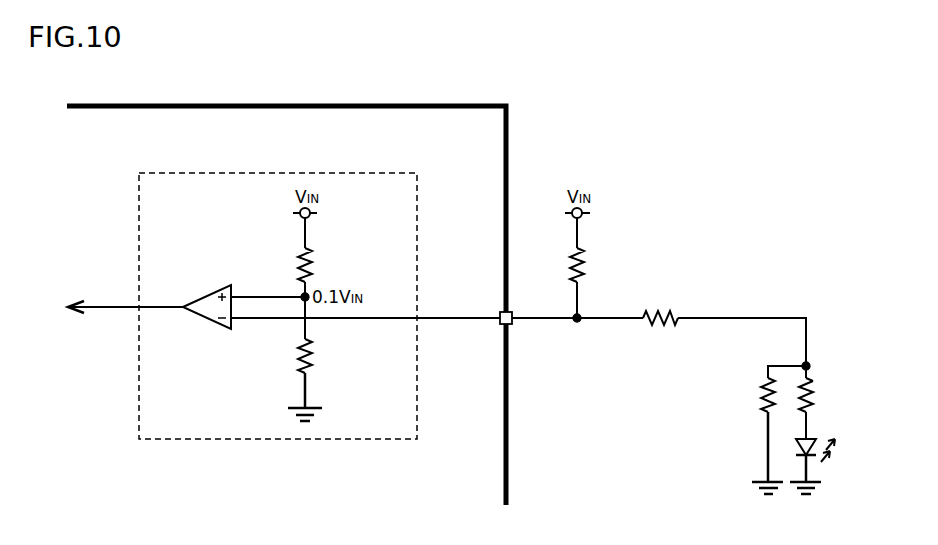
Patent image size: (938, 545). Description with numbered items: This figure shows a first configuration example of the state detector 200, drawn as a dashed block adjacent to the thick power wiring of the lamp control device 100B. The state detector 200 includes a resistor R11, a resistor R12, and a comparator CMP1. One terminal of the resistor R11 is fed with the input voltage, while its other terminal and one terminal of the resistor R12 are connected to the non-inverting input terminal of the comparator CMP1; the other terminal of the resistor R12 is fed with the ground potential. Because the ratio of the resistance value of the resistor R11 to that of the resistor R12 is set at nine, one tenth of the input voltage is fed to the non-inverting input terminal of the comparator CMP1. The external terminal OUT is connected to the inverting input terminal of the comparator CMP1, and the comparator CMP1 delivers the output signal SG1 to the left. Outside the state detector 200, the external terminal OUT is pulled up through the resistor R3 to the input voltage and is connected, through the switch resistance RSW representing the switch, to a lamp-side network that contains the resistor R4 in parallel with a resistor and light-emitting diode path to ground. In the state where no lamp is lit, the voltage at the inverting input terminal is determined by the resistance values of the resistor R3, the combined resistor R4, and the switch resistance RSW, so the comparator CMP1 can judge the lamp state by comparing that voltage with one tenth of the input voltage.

The lamp control device 100B is at (402, 104).
The state detector 200 is at (402, 172).
The comparator CMP1 is at (214, 292).
The output signal SG1 is at (125, 299).
The resistor R11 is at (318, 268).
The resistor R12 is at (318, 360).
The external terminal OUT is at (512, 325).
The resistor R3 is at (590, 262).
The switch resistance RSW is at (663, 308).
The resistor R4 is at (757, 400).